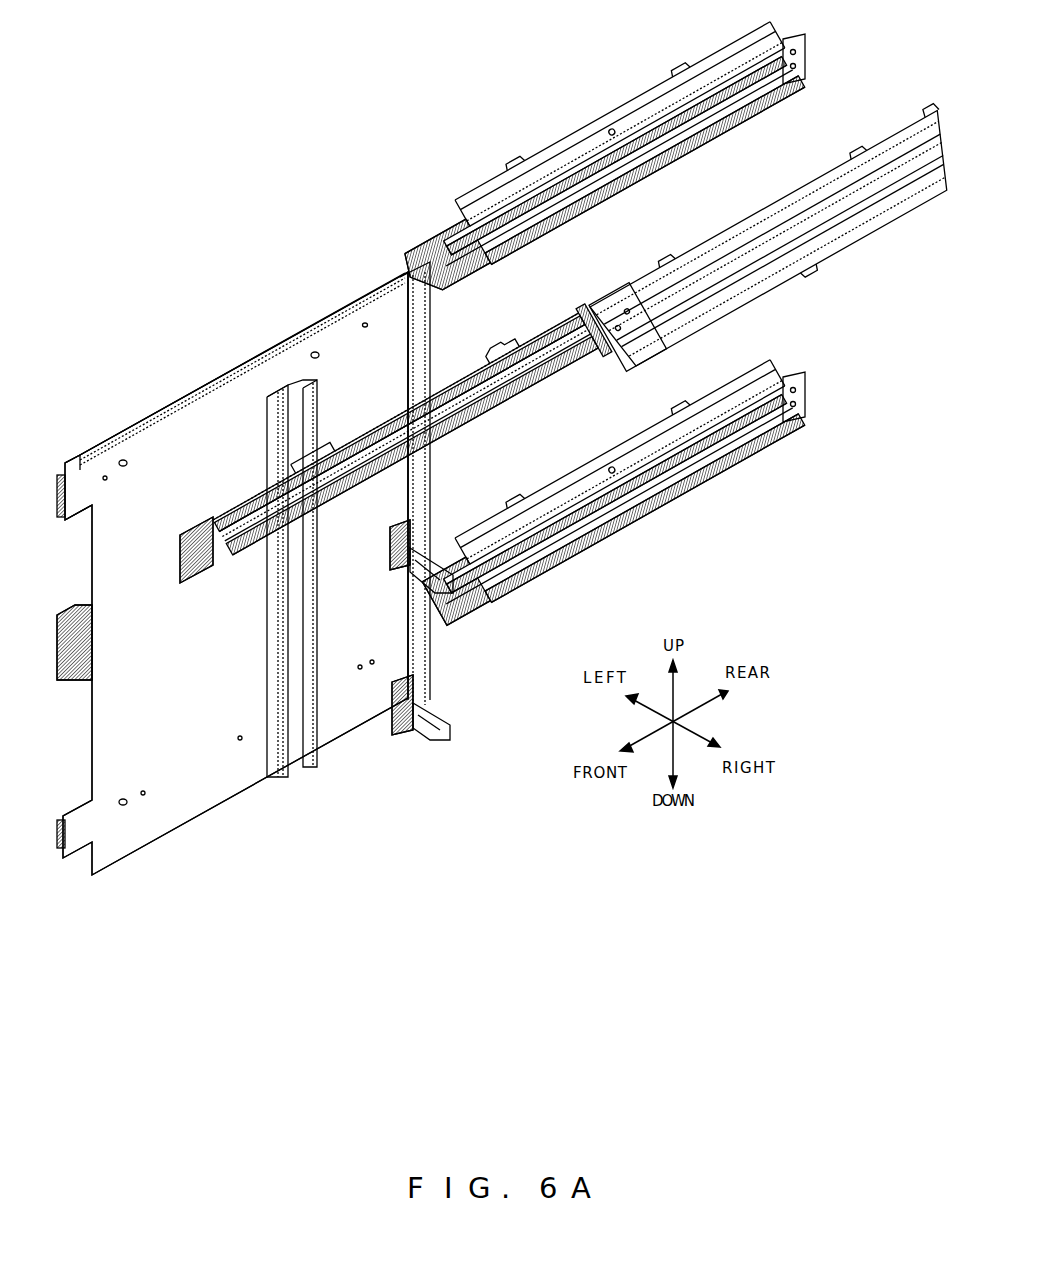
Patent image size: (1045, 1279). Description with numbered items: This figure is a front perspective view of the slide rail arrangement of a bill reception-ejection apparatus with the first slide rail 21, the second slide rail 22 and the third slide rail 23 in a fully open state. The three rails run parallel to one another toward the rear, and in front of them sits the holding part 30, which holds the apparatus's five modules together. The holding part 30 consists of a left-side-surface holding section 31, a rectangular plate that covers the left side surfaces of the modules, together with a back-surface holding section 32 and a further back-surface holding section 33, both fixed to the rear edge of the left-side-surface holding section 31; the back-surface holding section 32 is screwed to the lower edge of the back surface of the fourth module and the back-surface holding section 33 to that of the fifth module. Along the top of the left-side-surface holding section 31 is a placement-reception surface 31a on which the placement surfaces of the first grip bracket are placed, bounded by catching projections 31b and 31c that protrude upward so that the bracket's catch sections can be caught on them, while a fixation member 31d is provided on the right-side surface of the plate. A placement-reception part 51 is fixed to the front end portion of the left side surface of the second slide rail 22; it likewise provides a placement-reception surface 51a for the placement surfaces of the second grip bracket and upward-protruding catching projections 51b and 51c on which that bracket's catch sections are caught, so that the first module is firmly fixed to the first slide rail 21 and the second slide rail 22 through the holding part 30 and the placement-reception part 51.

The first slide rail 21 is at (660, 88).
The second slide rail 22 is at (833, 257).
The third slide rail 23 is at (700, 485).
The holding part 30 is at (287, 329).
The left-side-surface holding section 31 is at (222, 808).
The placement-reception surface 31a is at (172, 400).
The catching projection 31b is at (80, 457).
The catching projection 31c is at (397, 280).
The fixation member 31d is at (293, 407).
The back-surface holding section 32 is at (413, 550).
The back-surface holding section 33 is at (415, 710).
The placement-reception part 51 is at (178, 547).
The placement-reception surface 51a is at (257, 497).
The catching projection 51b is at (195, 532).
The catching projection 51c is at (500, 353).